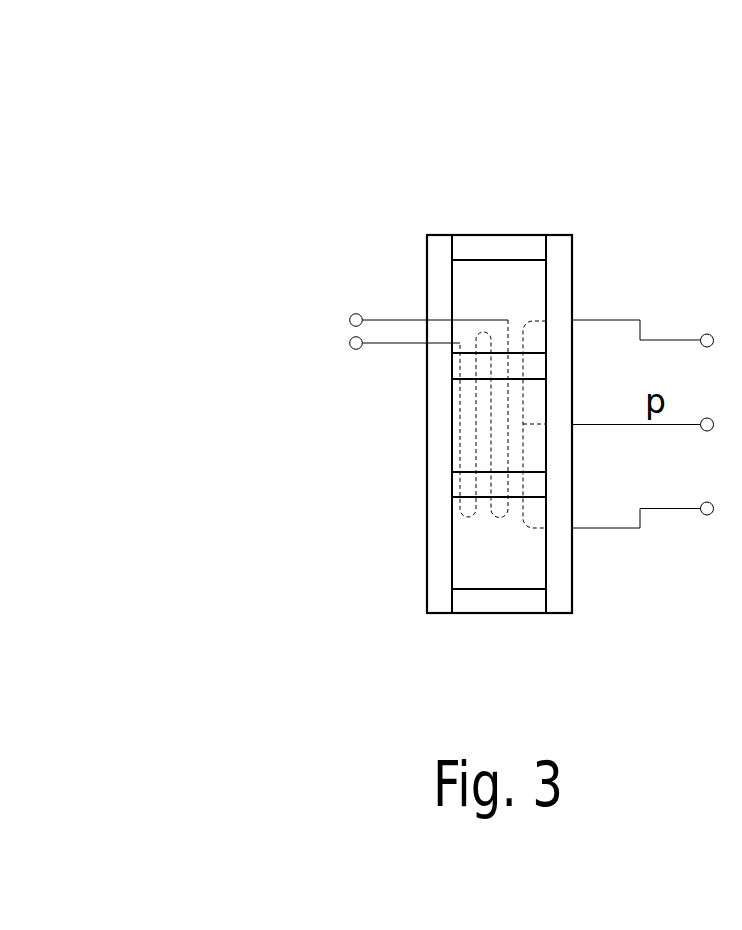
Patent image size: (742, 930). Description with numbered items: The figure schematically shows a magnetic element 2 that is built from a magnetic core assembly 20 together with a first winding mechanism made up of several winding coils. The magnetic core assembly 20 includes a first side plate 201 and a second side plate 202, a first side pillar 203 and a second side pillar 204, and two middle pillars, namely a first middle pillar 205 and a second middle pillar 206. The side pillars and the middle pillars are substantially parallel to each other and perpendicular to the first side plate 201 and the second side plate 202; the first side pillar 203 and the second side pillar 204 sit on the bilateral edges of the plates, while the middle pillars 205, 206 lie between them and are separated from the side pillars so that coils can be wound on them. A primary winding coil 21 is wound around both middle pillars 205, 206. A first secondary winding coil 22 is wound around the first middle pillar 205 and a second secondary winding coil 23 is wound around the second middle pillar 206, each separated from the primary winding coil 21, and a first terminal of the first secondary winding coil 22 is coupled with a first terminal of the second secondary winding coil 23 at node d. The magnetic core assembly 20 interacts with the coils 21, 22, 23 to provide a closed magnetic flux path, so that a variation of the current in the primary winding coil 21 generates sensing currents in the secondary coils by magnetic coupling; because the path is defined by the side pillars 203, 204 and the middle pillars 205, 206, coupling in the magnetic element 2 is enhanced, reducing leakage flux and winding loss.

The magnetic element 2 is at (318, 58).
The magnetic core assembly 20 is at (218, 173).
The primary winding coil 21 is at (392, 344).
The first secondary winding coil 22 is at (596, 320).
The second secondary winding coil 23 is at (596, 528).
The first side plate 201 is at (442, 280).
The second side plate 202 is at (562, 555).
The first side pillar 203 is at (500, 247).
The second side pillar 204 is at (495, 602).
The first middle pillar 205 is at (490, 363).
The second middle pillar 206 is at (495, 483).